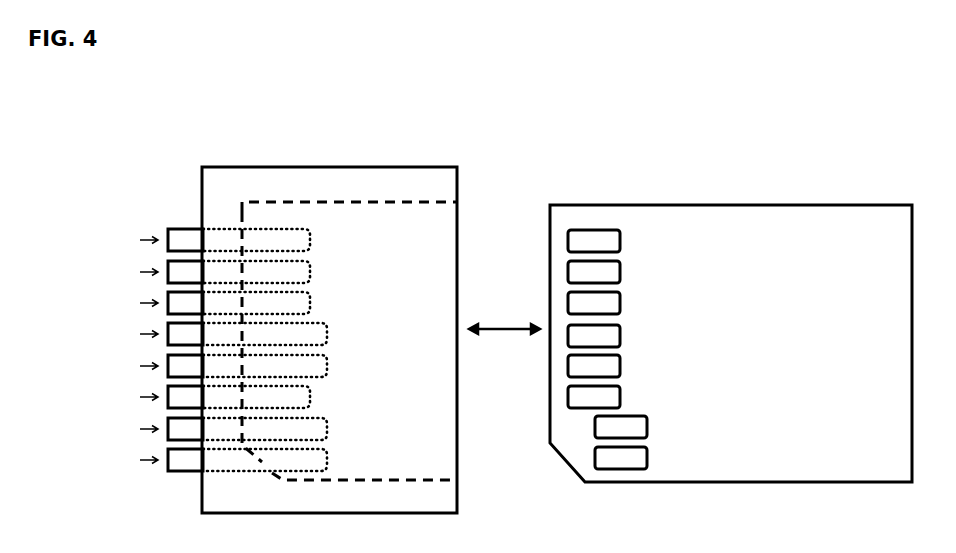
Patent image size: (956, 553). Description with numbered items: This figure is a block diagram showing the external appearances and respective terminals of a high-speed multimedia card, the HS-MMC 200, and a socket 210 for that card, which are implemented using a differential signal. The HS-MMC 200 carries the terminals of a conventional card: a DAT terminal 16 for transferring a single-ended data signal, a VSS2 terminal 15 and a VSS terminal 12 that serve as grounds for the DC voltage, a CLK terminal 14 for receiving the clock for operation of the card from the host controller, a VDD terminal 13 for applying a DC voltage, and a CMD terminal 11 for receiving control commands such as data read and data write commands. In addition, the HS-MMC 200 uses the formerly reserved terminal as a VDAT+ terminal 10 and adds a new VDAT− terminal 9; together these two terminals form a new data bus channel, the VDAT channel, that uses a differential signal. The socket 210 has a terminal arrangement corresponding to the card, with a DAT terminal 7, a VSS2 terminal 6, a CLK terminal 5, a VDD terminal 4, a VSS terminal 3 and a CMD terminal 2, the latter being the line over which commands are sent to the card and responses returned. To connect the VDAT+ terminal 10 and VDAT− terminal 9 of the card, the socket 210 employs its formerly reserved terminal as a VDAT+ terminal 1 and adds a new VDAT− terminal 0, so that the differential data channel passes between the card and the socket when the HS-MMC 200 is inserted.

The socket 210 is at (266, 321).
The high-speed MMC 200 is at (731, 324).
The VDAT− terminal 0 is at (212, 460).
The VDAT+ terminal 1 is at (207, 429).
The CMD line 2 is at (217, 397).
The VSS terminal 3 is at (225, 368).
The VDD terminal 4 is at (224, 336).
The CLK terminal 5 is at (222, 303).
The VSS2 terminal 6 is at (221, 274).
The DAT terminal 7 is at (220, 240).
The VDAT− terminal 9 is at (630, 458).
The VDAT+ terminal 10 is at (636, 427).
The CMD terminal 11 is at (623, 397).
The VSS terminal 12 is at (623, 366).
The VDD terminal 13 is at (623, 336).
The CLK terminal 14 is at (623, 303).
The VSS2 terminal 15 is at (623, 272).
The DAT terminal 16 is at (623, 241).